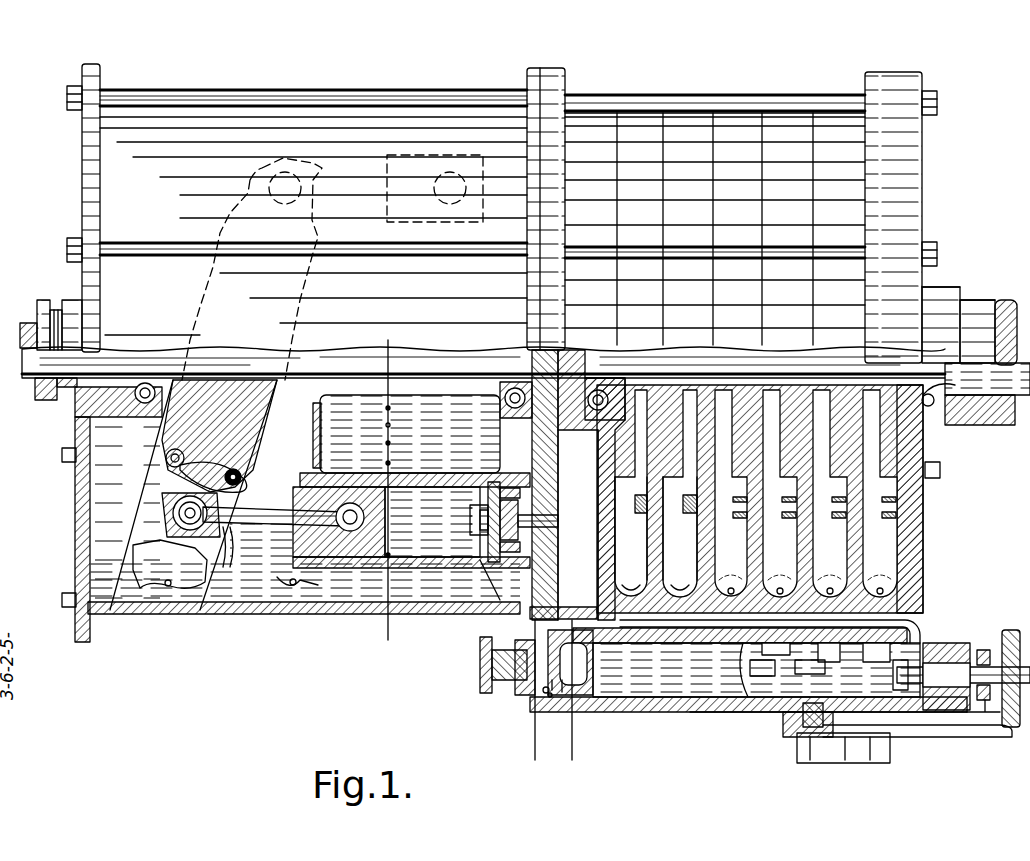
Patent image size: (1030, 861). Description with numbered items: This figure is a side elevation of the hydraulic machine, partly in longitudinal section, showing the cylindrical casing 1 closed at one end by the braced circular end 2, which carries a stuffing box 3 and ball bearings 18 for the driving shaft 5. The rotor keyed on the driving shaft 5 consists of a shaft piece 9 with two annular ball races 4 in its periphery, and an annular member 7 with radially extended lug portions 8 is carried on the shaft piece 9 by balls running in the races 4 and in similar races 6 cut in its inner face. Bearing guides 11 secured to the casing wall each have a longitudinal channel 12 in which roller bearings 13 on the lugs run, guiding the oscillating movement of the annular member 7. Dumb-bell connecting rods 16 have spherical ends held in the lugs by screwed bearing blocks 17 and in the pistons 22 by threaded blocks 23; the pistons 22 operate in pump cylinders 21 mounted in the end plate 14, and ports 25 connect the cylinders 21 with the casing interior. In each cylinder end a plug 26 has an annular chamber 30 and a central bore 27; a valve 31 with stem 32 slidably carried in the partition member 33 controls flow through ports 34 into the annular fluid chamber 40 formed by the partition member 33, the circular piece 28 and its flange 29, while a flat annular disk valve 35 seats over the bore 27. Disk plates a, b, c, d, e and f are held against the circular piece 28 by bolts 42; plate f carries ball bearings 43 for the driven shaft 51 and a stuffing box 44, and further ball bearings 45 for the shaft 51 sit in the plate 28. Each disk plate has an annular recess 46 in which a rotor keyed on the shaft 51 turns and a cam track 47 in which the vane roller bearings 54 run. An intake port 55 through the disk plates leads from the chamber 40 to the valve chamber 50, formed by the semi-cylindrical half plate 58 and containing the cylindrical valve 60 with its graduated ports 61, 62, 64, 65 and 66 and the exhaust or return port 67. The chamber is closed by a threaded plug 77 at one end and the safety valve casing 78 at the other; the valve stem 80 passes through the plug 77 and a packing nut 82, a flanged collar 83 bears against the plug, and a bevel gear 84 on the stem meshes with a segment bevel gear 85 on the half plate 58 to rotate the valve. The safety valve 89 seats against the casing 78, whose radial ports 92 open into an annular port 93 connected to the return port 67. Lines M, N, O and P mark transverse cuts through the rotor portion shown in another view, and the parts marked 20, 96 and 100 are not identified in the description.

The cylindrical casing 1 is at (172, 100).
The braced circular end 2 is at (82, 187).
The stuffing box 3 is at (44, 318).
The annular grooved ball races 4 is at (243, 477).
The driving shaft 5 is at (205, 355).
The ball races 6 is at (245, 488).
The annular member 7 is at (166, 458).
The radially extended lug portions 8 is at (172, 515).
The shaft piece 9 is at (258, 378).
The bearing guides 11 is at (246, 547).
The longitudinal channel 12 is at (118, 562).
The roller bearings 13 is at (200, 615).
The end plate 14 is at (527, 313).
The dumb-bell connecting rods 16 is at (274, 516).
The bearing blocks 17 is at (225, 564).
The ball bearings 18 is at (148, 380).
The housing wall 20 is at (598, 465).
The pump cylinders 21 is at (392, 443).
The pistons 22 is at (365, 568).
The threaded block 23 is at (330, 568).
The ports 25 is at (505, 473).
The plug 26 is at (485, 610).
The central bore 27 is at (440, 632).
The circular piece 28 is at (632, 112).
The flange 29 is at (598, 111).
The annular recess or chamber 30 is at (490, 482).
The valve 31 is at (500, 522).
The valve stem 32 is at (560, 520).
The partition member 33 is at (560, 322).
The ports 34 is at (522, 494).
The common flat valve 35 is at (468, 517).
The annular fluid chamber 40 is at (578, 525).
The bolts 42 is at (395, 90).
The ball bearings 43 is at (940, 410).
The stuffing box 44 is at (1002, 310).
The ball bearings 45 is at (598, 378).
The annular recess 46 is at (640, 548).
The cam track 47 is at (930, 535).
The valve chamber 50 is at (783, 722).
The driven shaft 51 is at (612, 355).
The roller bearing 54 is at (733, 515).
The intake port 55 is at (770, 625).
The half plate 58 is at (625, 712).
The cylindrical valve 60 is at (562, 693).
The port 61 is at (626, 583).
The port 62 is at (678, 583).
The port 64 is at (773, 667).
The port 65 is at (822, 668).
The port 66 is at (826, 652).
The exhaust or return port 67 is at (590, 728).
The threaded plug 77 is at (978, 648).
The safety valve casing 78 is at (515, 693).
The valve stem 80 is at (942, 675).
The packing nut 82 is at (1008, 630).
The flanged collar 83 is at (935, 643).
The bevel gear 84 is at (983, 710).
The segment bevel gear 85 is at (965, 737).
The safety valve 89 is at (553, 692).
The radial ports 92 is at (546, 693).
The annular port 93 is at (550, 697).
The cap 96 is at (482, 665).
The bolt 100 is at (797, 750).
The section line M is at (383, 505).
The section line N is at (520, 648).
The section line O is at (533, 699).
The section line P is at (570, 699).
The disk plate a is at (665, 115).
The disk plate b is at (700, 115).
The disk plate c is at (775, 117).
The disk plate d is at (806, 117).
The disk plate e is at (838, 117).
The disk plate f is at (886, 82).